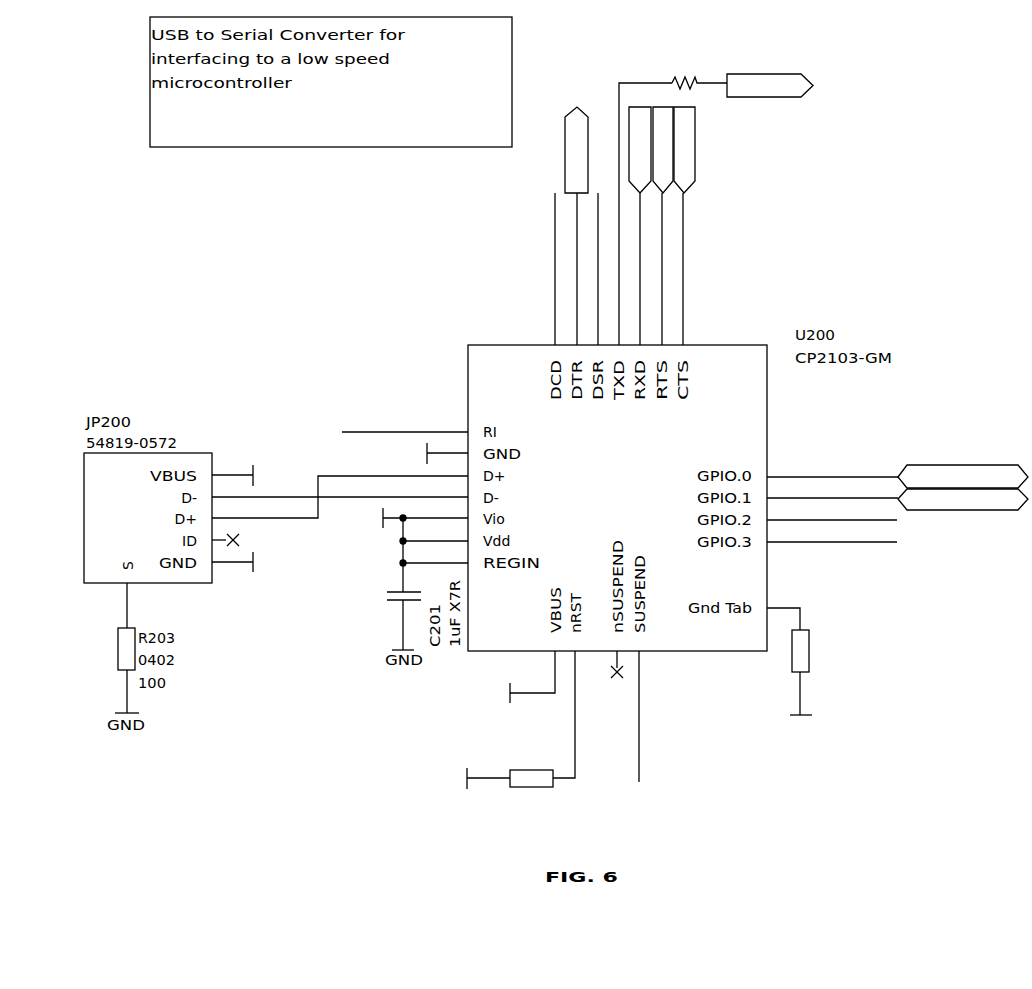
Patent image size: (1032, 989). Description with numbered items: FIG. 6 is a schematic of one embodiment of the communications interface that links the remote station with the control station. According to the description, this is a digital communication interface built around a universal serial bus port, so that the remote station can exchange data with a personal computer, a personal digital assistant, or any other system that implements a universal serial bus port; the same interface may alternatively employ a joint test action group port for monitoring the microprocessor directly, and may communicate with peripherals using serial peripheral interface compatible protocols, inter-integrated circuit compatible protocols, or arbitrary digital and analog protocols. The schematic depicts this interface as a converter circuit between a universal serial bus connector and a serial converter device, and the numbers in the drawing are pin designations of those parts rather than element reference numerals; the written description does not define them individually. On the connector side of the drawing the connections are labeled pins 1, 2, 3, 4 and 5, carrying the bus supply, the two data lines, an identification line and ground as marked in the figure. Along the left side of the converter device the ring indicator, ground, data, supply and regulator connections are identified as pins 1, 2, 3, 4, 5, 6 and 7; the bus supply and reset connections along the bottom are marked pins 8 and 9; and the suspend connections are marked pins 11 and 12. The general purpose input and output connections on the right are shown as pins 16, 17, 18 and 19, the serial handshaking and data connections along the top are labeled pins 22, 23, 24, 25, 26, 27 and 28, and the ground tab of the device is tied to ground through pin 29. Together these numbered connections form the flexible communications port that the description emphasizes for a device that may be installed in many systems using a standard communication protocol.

The RI pin / VBUS pin 1 is at (340, 449).
The GND pin / D- pin 2 is at (340, 466).
The D+ pin 3 is at (340, 487).
The D- pin / ID pin 4 is at (331, 512).
The Vio pin / GND pin 5 is at (340, 536).
The Vdd pin 6 is at (434, 533).
The REGIN pin 7 is at (434, 555).
The VBUS pin 8 is at (512, 677).
The nRST pin 9 is at (499, 739).
The nSUSPEND pin 11 is at (611, 670).
The SUSPEND pin 12 is at (630, 716).
The GPIO.3 pin 16 is at (832, 533).
The GPIO.2 pin 17 is at (832, 511).
The GPIO.1 pin 18 is at (897, 495).
The GPIO.0 pin 19 is at (897, 473).
The CTS pin 22 is at (681, 226).
The RTS pin 23 is at (659, 226).
The RXD pin 24 is at (637, 226).
The TXD pin 25 is at (708, 198).
The DSR pin 26 is at (590, 269).
The DTR pin 27 is at (574, 226).
The DCD pin 28 is at (547, 269).
The Gnd Tab pin 29 is at (812, 663).